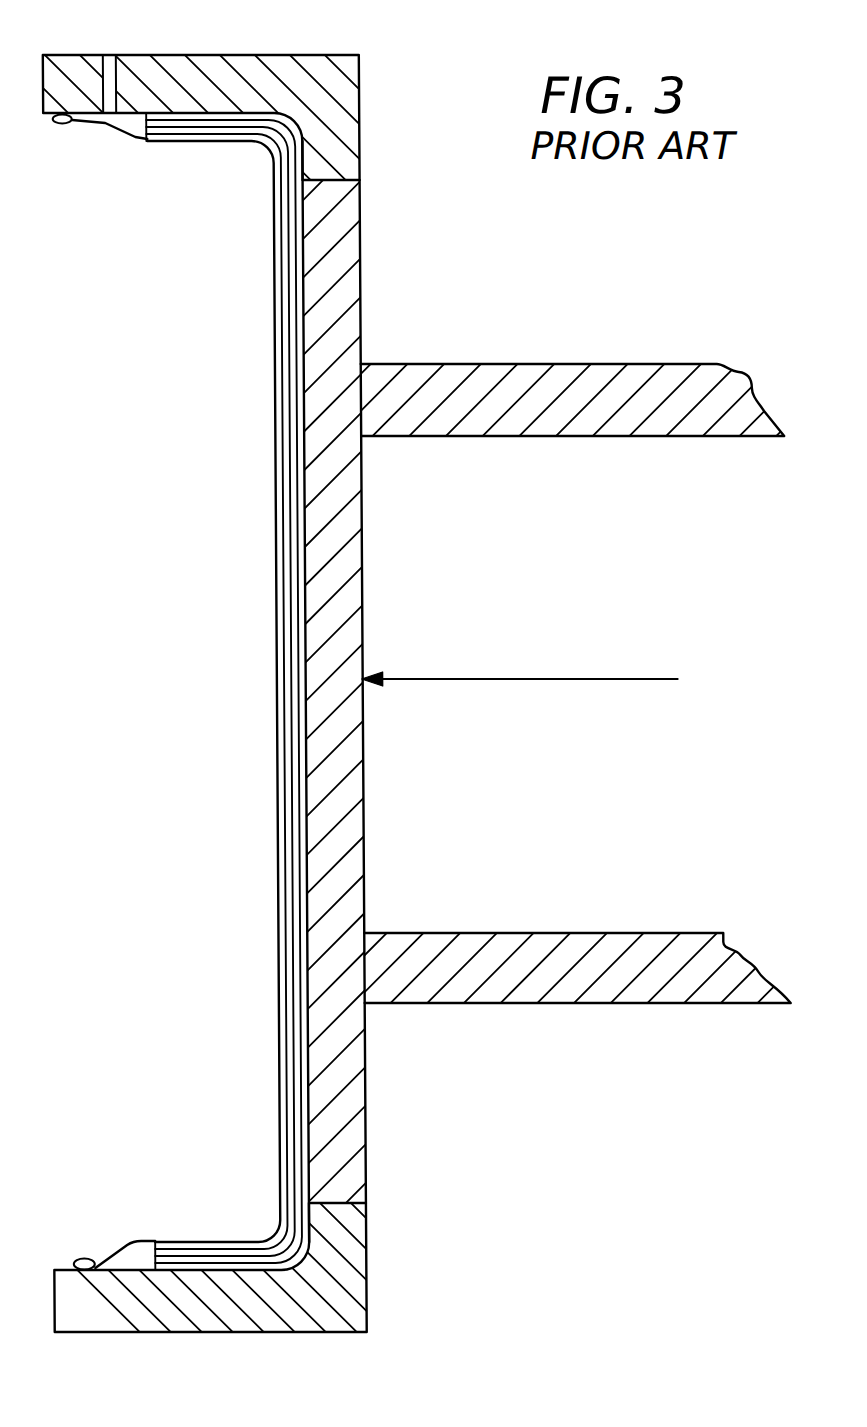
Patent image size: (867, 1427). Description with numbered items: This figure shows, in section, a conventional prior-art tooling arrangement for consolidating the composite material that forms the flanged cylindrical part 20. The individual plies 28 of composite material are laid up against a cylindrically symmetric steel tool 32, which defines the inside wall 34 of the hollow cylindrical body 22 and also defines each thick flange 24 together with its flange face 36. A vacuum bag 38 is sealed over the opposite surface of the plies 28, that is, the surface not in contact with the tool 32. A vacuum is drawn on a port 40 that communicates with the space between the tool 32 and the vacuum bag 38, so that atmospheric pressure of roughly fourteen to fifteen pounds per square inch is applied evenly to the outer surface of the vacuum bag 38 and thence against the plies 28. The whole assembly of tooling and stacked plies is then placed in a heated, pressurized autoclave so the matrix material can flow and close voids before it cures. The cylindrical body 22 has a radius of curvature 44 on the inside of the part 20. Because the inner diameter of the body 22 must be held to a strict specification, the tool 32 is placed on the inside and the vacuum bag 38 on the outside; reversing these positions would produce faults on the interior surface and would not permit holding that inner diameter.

The part 20 is at (179, 691).
The hollow cylindrical body 22 is at (292, 316).
The flange 24 is at (182, 134).
The plies 28 is at (297, 478).
The tool 32 is at (342, 1148).
The inside wall 34 is at (302, 703).
The flange face 36 is at (193, 112).
The vacuum bag 38 is at (130, 136).
The port 40 is at (95, 72).
The radius of curvature 44 is at (573, 683).